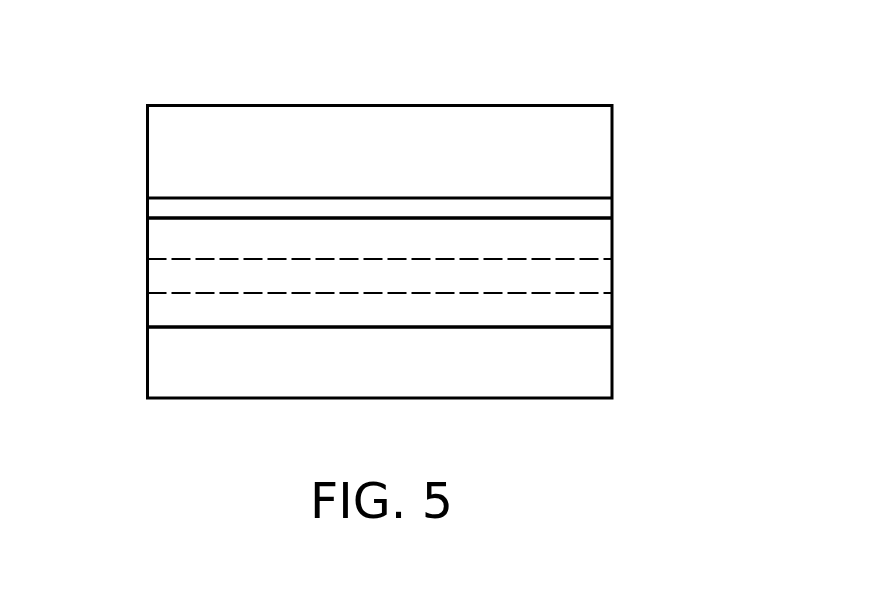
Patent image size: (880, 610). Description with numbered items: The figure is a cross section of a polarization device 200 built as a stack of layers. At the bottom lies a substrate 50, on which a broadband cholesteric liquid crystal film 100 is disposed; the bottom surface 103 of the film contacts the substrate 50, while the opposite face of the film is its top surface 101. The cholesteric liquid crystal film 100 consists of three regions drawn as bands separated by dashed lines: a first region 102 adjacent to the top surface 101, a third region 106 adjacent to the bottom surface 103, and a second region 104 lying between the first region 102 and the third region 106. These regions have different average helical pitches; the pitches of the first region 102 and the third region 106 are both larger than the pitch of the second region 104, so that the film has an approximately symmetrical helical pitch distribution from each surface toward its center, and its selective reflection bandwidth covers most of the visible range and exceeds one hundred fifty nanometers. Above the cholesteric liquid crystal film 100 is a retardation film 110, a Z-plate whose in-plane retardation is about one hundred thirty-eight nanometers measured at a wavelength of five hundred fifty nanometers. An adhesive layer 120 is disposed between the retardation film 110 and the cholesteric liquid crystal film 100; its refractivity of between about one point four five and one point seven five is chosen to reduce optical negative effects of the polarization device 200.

The polarization device 200 is at (757, 58).
The retardation film 110 is at (613, 151).
The adhesive layer 120 is at (613, 208).
The cholesteric liquid crystal film 100 is at (721, 215).
The top surface 101 is at (183, 220).
The first region 102 is at (613, 238).
The second region 104 is at (613, 276).
The third region 106 is at (613, 308).
The bottom surface 103 is at (180, 326).
The substrate 50 is at (613, 362).